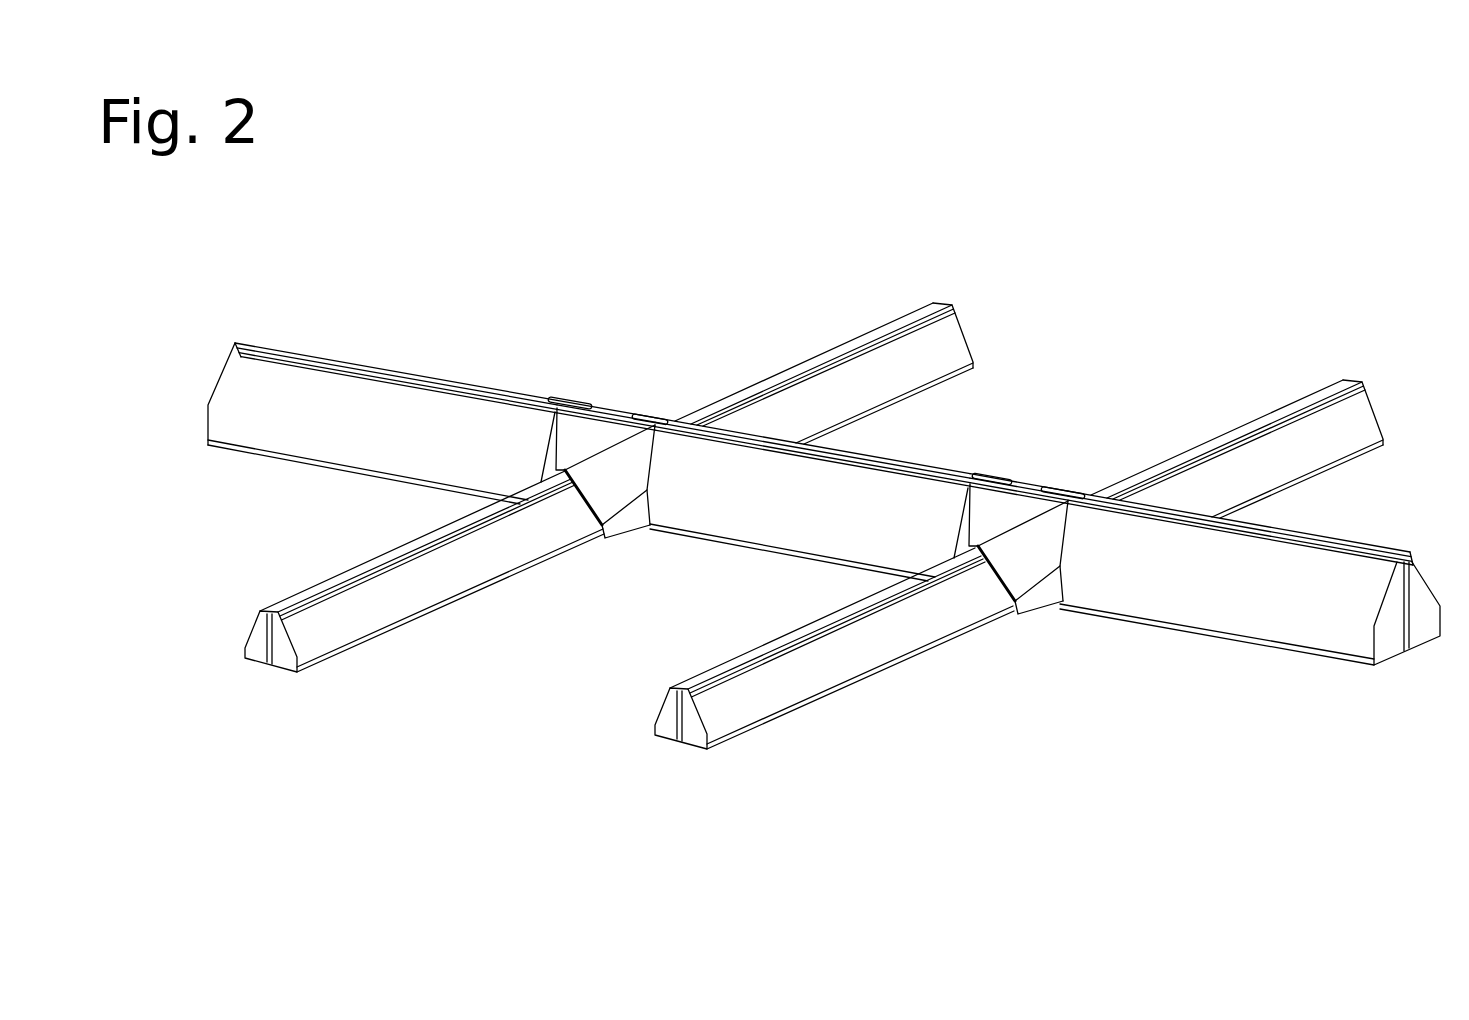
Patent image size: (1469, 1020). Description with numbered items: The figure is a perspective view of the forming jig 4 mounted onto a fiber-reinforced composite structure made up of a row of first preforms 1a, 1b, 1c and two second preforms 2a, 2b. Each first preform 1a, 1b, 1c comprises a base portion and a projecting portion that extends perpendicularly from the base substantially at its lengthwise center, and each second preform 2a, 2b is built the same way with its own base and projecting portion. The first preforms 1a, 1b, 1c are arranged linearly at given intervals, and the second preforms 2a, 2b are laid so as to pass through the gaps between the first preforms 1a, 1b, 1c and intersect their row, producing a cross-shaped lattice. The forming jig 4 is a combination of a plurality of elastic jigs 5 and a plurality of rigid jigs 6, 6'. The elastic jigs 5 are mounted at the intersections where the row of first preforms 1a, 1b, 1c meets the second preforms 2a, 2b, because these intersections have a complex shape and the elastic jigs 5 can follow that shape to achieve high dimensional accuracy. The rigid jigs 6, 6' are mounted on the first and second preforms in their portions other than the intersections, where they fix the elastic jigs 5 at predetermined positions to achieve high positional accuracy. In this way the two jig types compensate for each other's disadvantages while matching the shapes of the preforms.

The first preform 1a is at (290, 346).
The first preform 1b is at (924, 466).
The first preform 1c is at (1312, 537).
The second preform 2a is at (326, 657).
The second preform 2b is at (760, 728).
The forming jig 4 is at (721, 418).
The elastic jig 5 is at (573, 440).
The rigid jig 6 is at (454, 402).
The rigid jig 6' is at (421, 362).